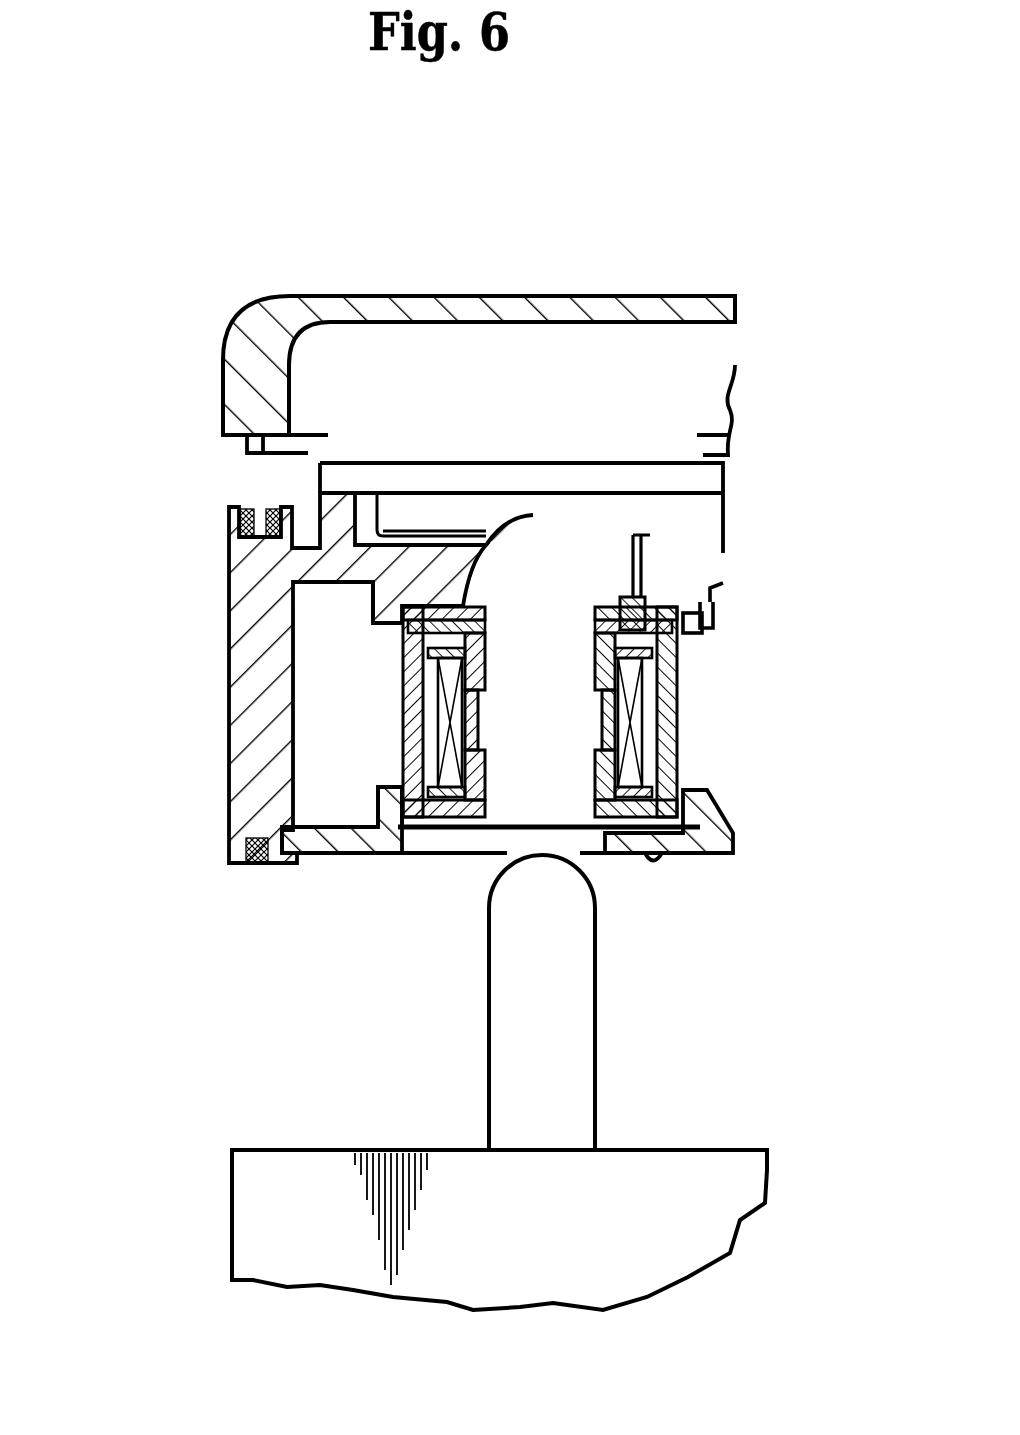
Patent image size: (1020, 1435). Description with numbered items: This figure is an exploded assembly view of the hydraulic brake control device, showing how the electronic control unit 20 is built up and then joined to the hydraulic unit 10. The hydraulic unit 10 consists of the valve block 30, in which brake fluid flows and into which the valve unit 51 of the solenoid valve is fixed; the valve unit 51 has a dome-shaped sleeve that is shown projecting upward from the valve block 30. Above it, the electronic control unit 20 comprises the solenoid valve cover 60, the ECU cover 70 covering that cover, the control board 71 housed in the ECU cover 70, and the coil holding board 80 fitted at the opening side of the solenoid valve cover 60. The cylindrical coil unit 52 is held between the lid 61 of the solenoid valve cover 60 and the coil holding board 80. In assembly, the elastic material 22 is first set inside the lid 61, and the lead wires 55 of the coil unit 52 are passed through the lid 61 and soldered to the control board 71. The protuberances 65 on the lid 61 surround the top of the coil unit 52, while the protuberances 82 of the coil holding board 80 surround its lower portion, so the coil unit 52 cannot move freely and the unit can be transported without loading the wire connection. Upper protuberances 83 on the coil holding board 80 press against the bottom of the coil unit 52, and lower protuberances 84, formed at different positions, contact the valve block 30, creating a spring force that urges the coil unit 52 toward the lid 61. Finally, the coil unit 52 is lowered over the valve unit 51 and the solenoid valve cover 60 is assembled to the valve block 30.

The hydraulic unit 10 is at (242, 1135).
The electronic control unit 20 is at (186, 478).
The elastic material 22 is at (713, 612).
The valve block 30 is at (730, 1150).
The valve unit 51 is at (596, 1022).
The coil unit 52 is at (678, 703).
The lead wires 55 is at (418, 530).
The solenoid valve cover 60 is at (229, 705).
The lid 61 is at (336, 583).
The protuberances 65 is at (703, 624).
The ECU cover 70 is at (440, 296).
The control board 71 is at (650, 463).
The coil holding board 80 is at (340, 857).
The protuberances 82 is at (712, 808).
The upper protuberances 83 is at (487, 828).
The lower protuberances 84 is at (430, 857).